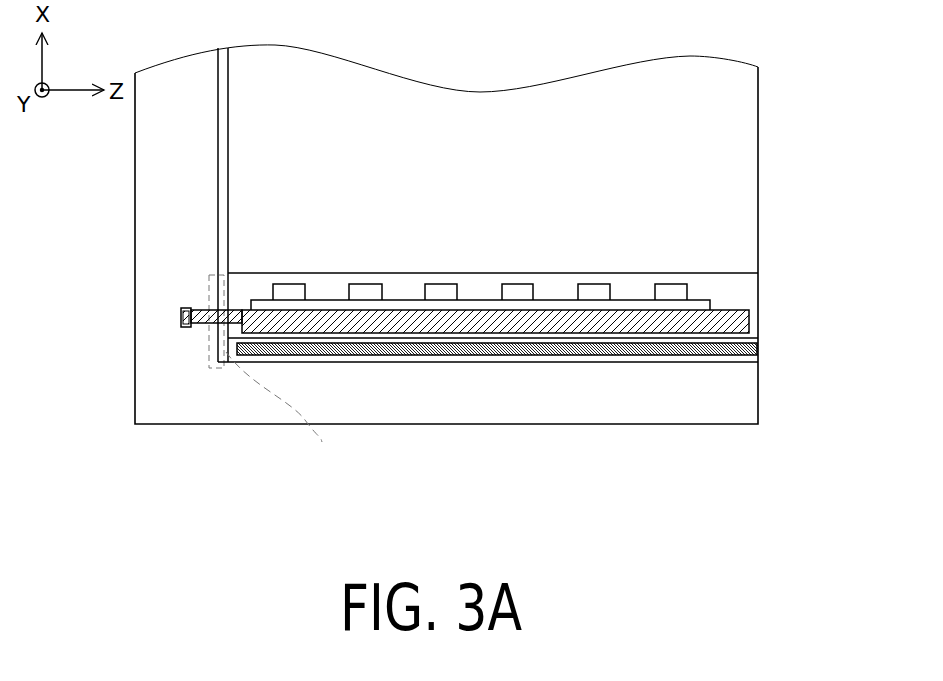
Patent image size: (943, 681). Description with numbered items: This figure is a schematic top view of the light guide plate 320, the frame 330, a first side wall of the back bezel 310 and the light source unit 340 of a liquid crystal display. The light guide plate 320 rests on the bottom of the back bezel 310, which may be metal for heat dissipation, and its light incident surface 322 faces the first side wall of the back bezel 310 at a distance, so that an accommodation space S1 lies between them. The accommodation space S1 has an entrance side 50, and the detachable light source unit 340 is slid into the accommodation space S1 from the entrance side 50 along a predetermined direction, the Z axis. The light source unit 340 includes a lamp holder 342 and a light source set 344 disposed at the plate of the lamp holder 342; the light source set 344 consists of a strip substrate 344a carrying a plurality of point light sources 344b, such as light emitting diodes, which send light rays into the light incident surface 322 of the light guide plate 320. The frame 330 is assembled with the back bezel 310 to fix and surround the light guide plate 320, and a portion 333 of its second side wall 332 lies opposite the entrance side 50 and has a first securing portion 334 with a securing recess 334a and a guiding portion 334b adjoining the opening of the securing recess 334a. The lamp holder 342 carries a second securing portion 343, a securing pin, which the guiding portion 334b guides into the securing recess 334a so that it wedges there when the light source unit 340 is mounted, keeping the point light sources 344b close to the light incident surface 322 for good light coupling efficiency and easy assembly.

The light guide plate 320 is at (748, 107).
The light incident surface 322 is at (739, 277).
The accommodation space S1 is at (630, 283).
The entrance side 50 is at (763, 289).
The back bezel 310 is at (757, 347).
The frame 330 is at (424, 414).
The second side wall 332 is at (221, 212).
The portion 333 is at (286, 413).
The first securing portion 334 is at (199, 413).
The securing recess 334a is at (184, 330).
The guiding portion 334b is at (199, 327).
The second securing portion 343 is at (209, 298).
The light source unit 340 is at (495, 420).
The lamp holder 342 is at (531, 323).
The light source set 344 is at (488, 400).
The strip substrate 344a is at (600, 303).
The point light sources 344b is at (668, 293).